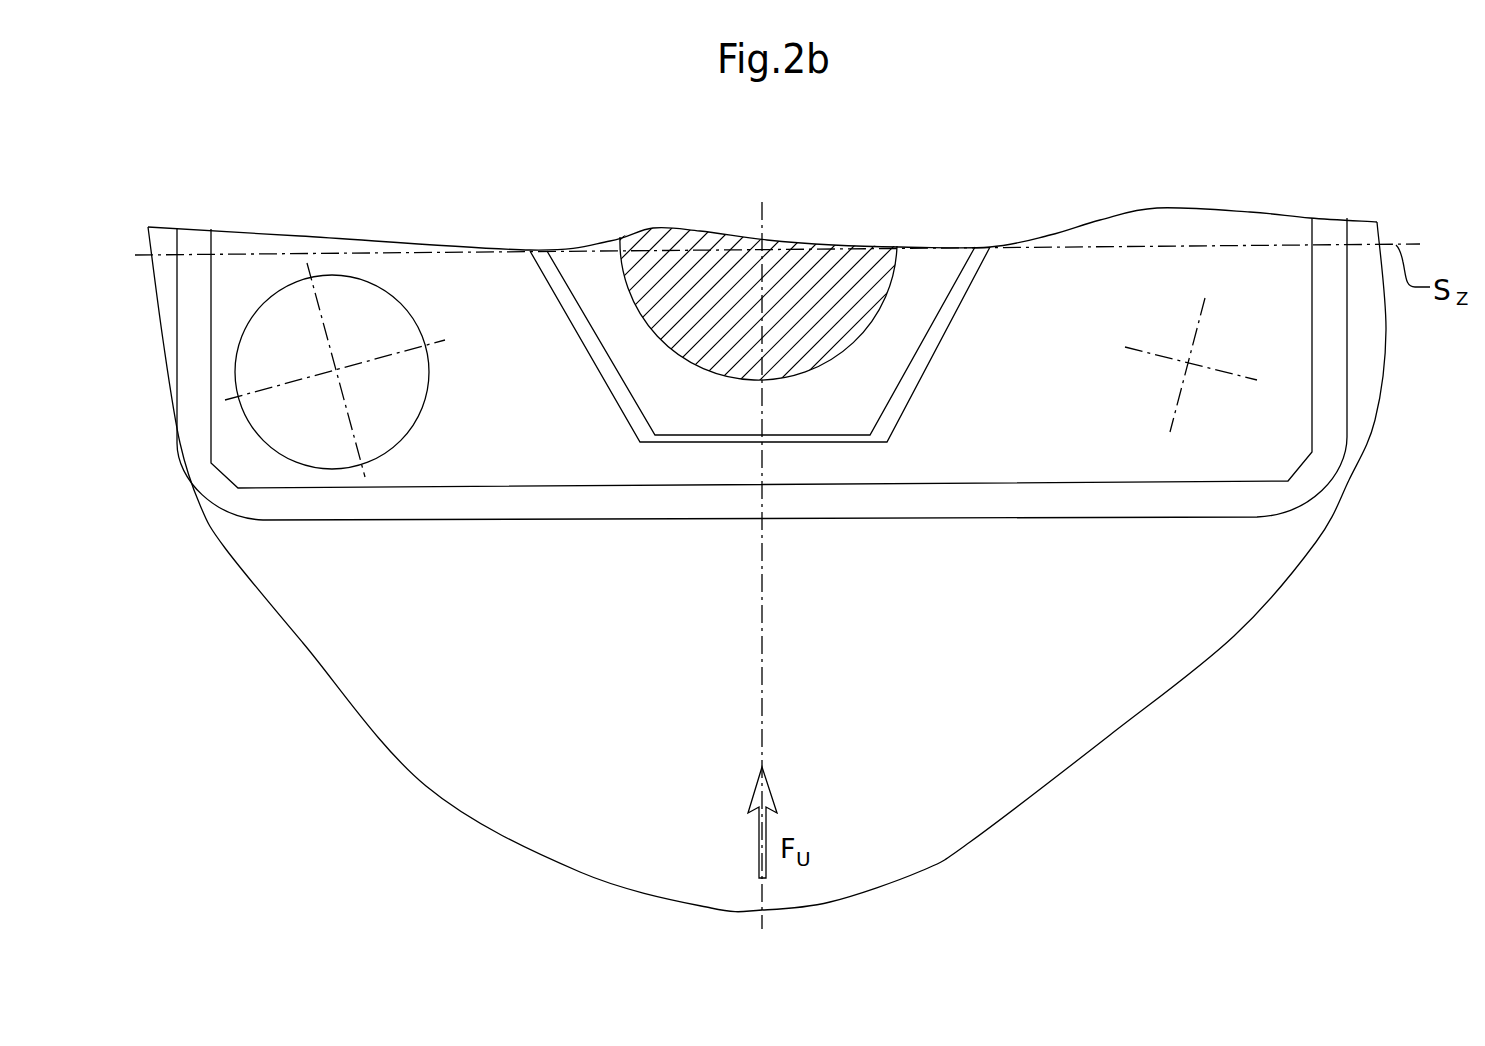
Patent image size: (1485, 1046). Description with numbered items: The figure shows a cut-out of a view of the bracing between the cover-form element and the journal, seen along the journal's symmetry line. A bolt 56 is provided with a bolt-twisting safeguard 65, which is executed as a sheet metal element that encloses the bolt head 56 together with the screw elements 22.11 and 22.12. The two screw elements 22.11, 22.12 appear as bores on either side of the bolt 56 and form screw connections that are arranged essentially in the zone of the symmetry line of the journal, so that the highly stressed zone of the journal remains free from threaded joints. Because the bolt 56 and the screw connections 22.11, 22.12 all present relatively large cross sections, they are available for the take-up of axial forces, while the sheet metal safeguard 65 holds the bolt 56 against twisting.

The screw element 22.12 is at (363, 297).
The bolt 56 is at (903, 273).
The bolt-twisting safeguard 65 is at (972, 283).
The screw element 22.11 is at (1190, 363).